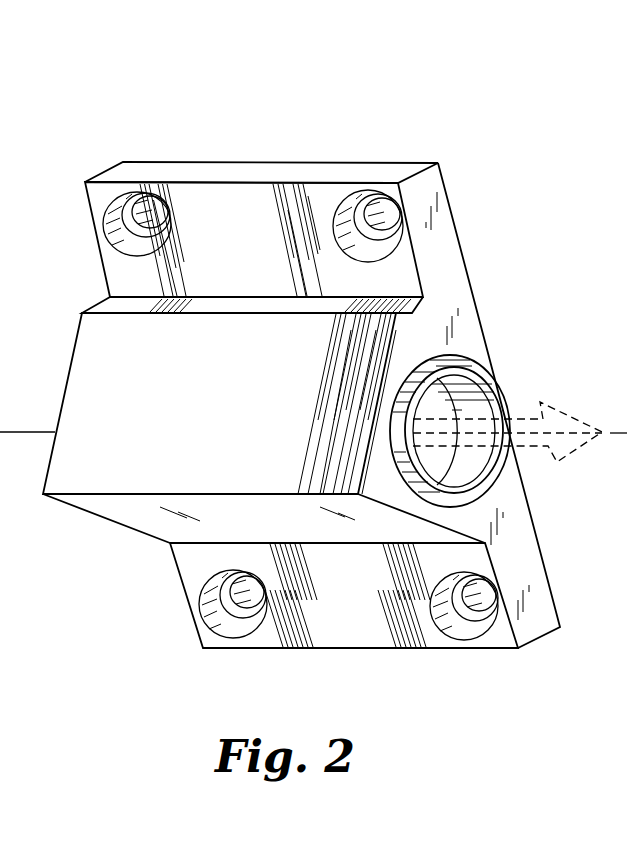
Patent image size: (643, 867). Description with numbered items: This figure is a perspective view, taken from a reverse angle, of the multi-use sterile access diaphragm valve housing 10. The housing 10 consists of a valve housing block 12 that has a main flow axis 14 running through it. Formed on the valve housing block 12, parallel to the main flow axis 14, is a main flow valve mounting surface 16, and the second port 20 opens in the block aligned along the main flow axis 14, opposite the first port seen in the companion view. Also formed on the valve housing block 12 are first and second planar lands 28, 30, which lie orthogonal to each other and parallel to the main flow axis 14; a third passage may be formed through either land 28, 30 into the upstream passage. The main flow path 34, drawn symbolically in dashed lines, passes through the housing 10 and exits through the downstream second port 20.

The diaphragm valve housing 10 is at (158, 92).
The valve housing block 12 is at (155, 168).
The main flow axis 14 is at (612, 437).
The main flow valve mounting surface 16 is at (468, 237).
The second port 20 is at (470, 405).
The first planar land 28 is at (82, 358).
The second planar land 30 is at (125, 519).
The main flow path 34 is at (533, 447).